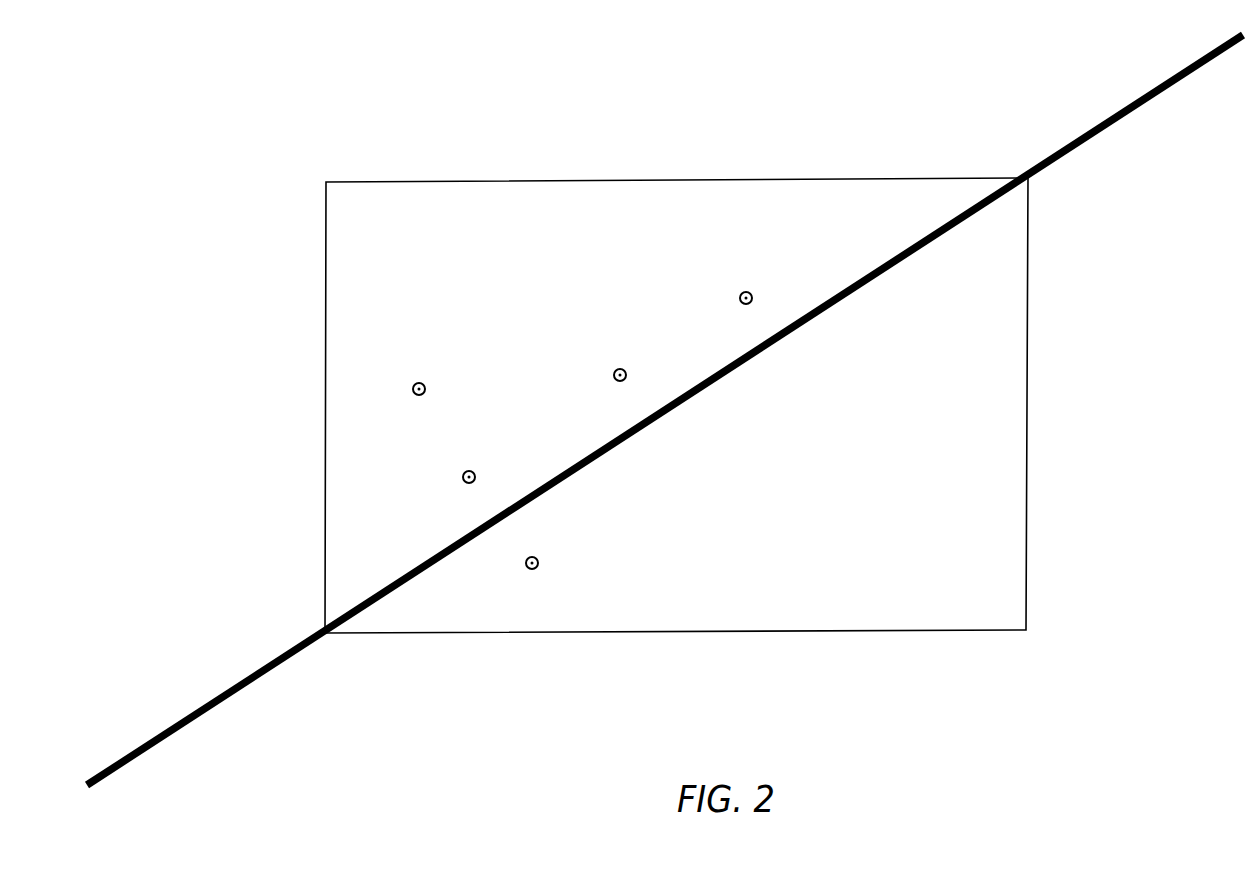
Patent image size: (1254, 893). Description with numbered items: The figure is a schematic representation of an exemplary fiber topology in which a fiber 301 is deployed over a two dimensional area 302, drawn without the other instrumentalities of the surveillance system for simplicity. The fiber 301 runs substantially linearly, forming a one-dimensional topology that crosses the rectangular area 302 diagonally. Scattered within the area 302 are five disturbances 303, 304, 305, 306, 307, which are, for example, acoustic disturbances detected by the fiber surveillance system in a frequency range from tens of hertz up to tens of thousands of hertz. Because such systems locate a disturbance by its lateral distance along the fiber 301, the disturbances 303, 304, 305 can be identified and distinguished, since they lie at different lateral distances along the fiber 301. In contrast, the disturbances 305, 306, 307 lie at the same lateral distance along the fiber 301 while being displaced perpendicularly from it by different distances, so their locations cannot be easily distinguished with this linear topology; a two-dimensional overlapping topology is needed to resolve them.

The fiber 301 is at (1152, 100).
The two dimensional area 302 is at (1026, 621).
The disturbance 303 is at (769, 283).
The disturbance 304 is at (630, 360).
The disturbance 305 is at (479, 461).
The disturbance 306 is at (408, 374).
The disturbance 307 is at (542, 579).